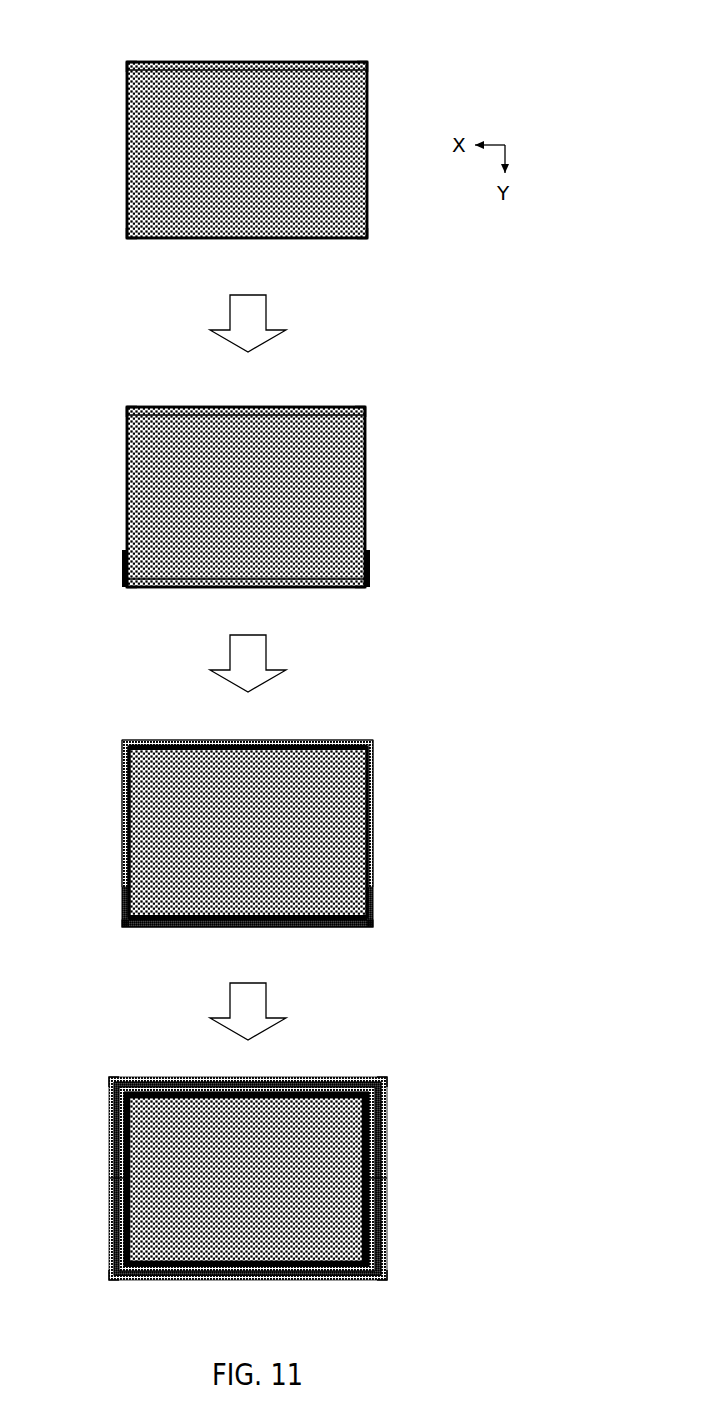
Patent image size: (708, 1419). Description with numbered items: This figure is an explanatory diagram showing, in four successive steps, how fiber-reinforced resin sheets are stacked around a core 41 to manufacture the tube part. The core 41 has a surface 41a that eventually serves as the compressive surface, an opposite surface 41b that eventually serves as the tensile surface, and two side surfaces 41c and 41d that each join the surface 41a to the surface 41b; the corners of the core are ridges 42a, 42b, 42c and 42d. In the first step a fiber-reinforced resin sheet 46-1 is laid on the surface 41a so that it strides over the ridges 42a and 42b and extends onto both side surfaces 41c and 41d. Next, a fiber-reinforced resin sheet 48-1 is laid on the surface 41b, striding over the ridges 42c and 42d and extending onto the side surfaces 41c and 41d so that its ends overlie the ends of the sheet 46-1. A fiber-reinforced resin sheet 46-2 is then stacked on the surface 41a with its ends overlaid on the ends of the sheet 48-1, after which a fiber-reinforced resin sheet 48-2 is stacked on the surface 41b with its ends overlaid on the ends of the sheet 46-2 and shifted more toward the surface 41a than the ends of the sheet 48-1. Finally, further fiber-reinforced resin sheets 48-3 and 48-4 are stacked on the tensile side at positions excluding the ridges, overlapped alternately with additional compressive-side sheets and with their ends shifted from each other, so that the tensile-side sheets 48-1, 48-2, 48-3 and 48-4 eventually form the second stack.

The core 41 is at (147, 139).
The surface 41a is at (294, 62).
The surface 41b is at (296, 240).
The side surface 41c is at (127, 172).
The side surface 41d is at (367, 168).
The ridge 42a is at (127, 62).
The ridge 42b is at (368, 62).
The ridge 42c is at (127, 240).
The ridge 42d is at (368, 240).
The fiber-reinforced resin sheet 46-1 is at (198, 63).
The fiber-reinforced resin sheet 46-2 is at (152, 742).
The fiber-reinforced resin sheet 48-1 is at (215, 588).
The fiber-reinforced resin sheet 48-2 is at (140, 928).
The fiber-reinforced resin sheet 48-3 is at (197, 1278).
The fiber-reinforced resin sheet 48-4 is at (142, 1280).